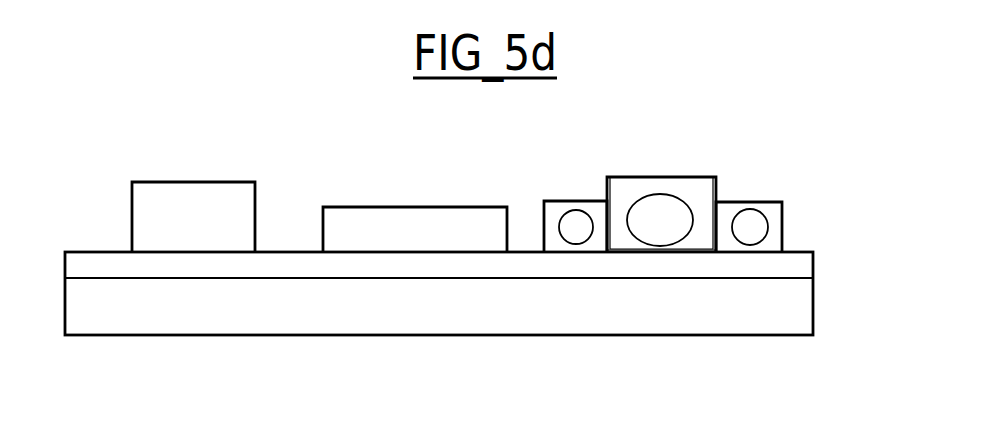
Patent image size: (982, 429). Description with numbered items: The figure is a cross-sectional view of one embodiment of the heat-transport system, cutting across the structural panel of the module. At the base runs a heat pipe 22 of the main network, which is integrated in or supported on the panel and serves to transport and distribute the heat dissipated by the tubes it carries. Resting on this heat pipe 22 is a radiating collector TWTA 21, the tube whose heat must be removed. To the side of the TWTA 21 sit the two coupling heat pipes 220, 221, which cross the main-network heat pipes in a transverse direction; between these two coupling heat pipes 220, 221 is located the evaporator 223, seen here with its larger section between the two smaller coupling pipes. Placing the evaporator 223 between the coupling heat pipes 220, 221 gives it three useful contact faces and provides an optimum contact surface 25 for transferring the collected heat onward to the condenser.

The radiating collector TWTA 21 is at (421, 202).
The heat pipe 22 is at (796, 274).
The contact surface 25 is at (620, 256).
The coupling heat pipe 220 is at (574, 197).
The coupling heat pipe 221 is at (748, 199).
The evaporator 223 is at (656, 176).